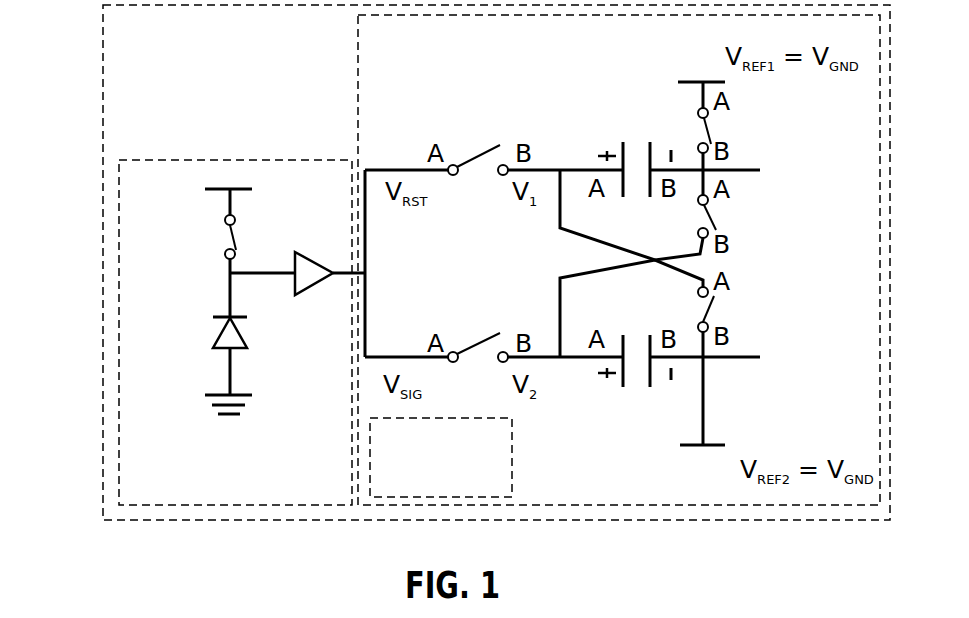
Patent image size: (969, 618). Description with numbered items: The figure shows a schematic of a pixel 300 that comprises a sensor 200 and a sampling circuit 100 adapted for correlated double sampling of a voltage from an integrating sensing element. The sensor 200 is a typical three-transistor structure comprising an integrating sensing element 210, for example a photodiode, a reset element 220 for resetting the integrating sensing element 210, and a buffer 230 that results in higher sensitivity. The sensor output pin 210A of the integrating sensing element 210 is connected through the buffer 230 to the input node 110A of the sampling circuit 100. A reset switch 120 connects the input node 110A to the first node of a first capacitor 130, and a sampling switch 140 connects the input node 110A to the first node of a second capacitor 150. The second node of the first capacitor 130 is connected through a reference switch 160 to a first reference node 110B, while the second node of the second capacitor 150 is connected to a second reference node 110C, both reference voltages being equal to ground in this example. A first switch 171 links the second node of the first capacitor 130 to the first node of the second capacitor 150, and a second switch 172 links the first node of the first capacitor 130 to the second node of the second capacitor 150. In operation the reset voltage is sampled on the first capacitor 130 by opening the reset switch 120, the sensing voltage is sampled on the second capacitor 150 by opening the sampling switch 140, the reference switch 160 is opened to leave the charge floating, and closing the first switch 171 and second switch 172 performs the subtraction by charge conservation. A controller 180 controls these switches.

The pixel 300 is at (98, 52).
The sampling circuit 100 is at (352, 66).
The sensor 200 is at (201, 154).
The controller 180 is at (441, 457).
The reset element 220 is at (203, 224).
The sensor output pin 210A is at (225, 288).
The integrating sensing element 210 is at (203, 365).
The buffer 230 is at (329, 252).
The input node 110A is at (367, 272).
The reset switch 120 is at (479, 141).
The sampling switch 140 is at (478, 327).
The first capacitor 130 is at (679, 152).
The second capacitor 150 is at (679, 341).
The reference switch 160 is at (734, 130).
The first switch 171 is at (734, 216).
The second switch 172 is at (734, 309).
The first reference node 110B is at (698, 82).
The second reference node 110C is at (695, 447).